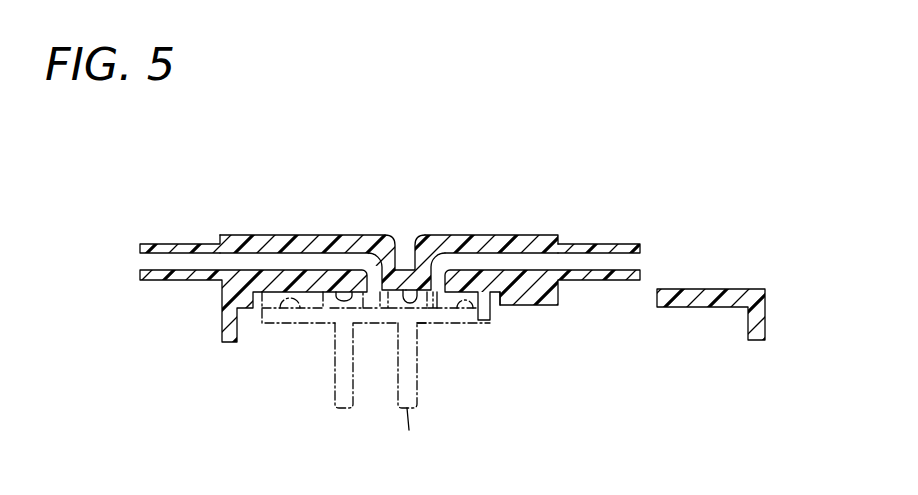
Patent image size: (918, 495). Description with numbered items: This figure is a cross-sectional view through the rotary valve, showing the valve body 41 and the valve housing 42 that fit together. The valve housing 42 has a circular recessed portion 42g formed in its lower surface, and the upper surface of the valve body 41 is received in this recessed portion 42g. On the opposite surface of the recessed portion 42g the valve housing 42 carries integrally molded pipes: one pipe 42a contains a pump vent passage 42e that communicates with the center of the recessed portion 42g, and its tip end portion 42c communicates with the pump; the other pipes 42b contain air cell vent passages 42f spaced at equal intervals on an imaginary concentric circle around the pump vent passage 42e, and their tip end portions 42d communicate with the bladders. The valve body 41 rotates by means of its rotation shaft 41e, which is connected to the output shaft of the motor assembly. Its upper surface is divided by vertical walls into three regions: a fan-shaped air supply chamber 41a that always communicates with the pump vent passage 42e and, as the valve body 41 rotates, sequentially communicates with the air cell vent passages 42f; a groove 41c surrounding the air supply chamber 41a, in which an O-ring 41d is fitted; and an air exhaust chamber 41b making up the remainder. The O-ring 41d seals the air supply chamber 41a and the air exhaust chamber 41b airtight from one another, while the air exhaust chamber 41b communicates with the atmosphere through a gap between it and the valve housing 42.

The valve body 41 is at (455, 326).
The air supply chamber 41a is at (378, 308).
The air exhaust chamber 41b is at (284, 303).
The groove 41c is at (330, 310).
The O-ring 41d is at (425, 326).
The rotation shaft 41e is at (409, 430).
The valve housing 42 is at (708, 289).
The pipe 42a is at (291, 235).
The pipes 42b is at (523, 235).
The tip end portion 42c is at (161, 244).
The tip end portions 42d is at (624, 244).
The pump vent passage 42e is at (368, 253).
The air cell vent passages 42f is at (445, 253).
The recessed portion 42g is at (497, 296).